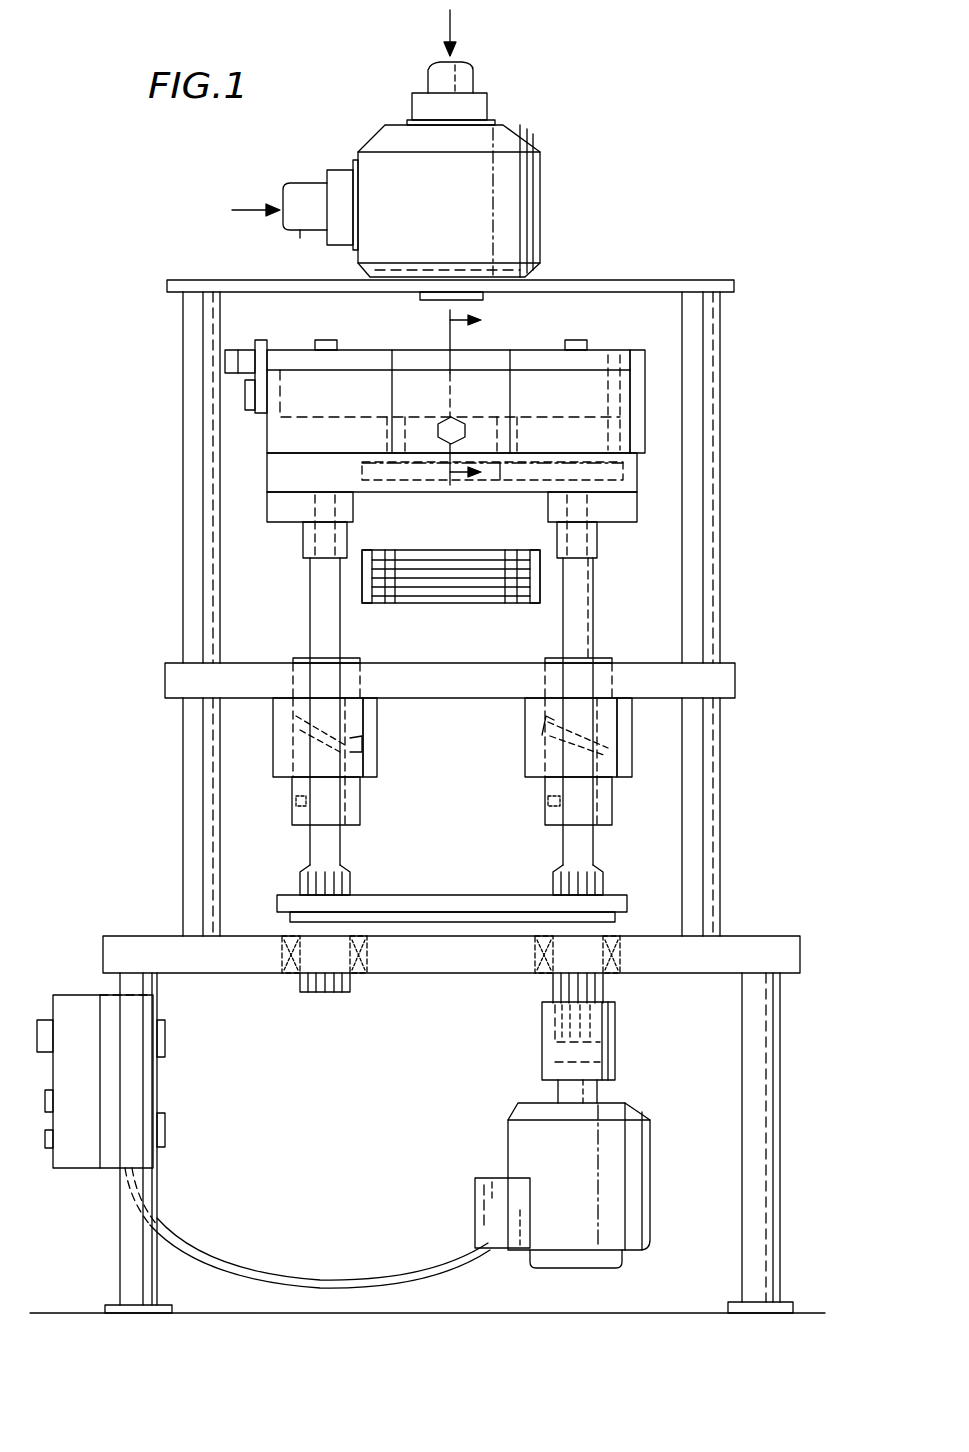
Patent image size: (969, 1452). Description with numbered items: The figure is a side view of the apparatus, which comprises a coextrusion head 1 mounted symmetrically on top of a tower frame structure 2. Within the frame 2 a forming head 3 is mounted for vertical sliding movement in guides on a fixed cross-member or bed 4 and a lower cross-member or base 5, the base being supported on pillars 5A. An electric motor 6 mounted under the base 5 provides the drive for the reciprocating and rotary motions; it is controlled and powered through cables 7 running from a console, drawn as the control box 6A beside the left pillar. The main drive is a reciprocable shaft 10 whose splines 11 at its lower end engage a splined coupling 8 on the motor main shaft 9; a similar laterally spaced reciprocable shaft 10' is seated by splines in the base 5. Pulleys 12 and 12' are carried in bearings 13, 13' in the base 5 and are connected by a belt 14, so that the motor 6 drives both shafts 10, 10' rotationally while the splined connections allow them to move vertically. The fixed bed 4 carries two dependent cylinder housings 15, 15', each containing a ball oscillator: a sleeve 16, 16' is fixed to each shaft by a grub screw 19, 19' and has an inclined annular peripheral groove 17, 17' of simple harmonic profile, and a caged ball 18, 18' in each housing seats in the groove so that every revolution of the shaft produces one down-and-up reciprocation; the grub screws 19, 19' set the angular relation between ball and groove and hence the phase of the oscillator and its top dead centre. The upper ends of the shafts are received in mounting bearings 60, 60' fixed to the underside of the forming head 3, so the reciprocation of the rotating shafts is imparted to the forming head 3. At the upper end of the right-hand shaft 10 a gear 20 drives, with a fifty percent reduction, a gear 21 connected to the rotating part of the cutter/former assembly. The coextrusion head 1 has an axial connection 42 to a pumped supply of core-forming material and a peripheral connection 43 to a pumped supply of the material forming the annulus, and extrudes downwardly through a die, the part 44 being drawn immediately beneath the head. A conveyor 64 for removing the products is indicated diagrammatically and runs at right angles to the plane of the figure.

The coextrusion head 1 is at (453, 203).
The tower frame structure 2 is at (700, 470).
The forming head 3 is at (568, 425).
The fixed cross-member or bed 4 is at (480, 682).
The lower cross-member or base 5 is at (183, 950).
The pillars 5A is at (135, 1253).
The electric motor 6 is at (612, 1198).
The control box 6A is at (85, 1133).
The cables 7 is at (265, 1282).
The splined coupling 8 is at (600, 1050).
The motor main shaft 9 is at (570, 1095).
The reciprocable shaft 10 is at (605, 711).
The reciprocable shaft 10' is at (292, 711).
The splines 11 is at (585, 988).
The pulley 12 is at (614, 873).
The pulley 12' is at (288, 879).
The bearing 13 is at (608, 934).
The bearing 13' is at (296, 947).
The belt 14 is at (452, 912).
The cylinder housing 15 is at (604, 737).
The cylinder housing 15' is at (249, 737).
The sleeve 16 is at (606, 807).
The sleeve 16' is at (355, 807).
The inclined annular peripheral groove 17 is at (517, 727).
The inclined annular peripheral groove 17' is at (391, 749).
The ball 18 is at (544, 753).
The ball 18' is at (284, 747).
The grub screw 19 is at (526, 818).
The grub screw 19' is at (268, 818).
The gear 20 is at (583, 472).
The gear 21 is at (500, 482).
The axial connection 42 is at (450, 77).
The peripheral connection 43 is at (313, 195).
The mounting block 44 is at (472, 298).
The mounting bearing 60 is at (660, 525).
The mounting bearing 60' is at (237, 521).
The conveyor 64 is at (410, 565).